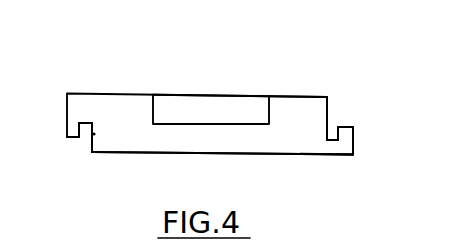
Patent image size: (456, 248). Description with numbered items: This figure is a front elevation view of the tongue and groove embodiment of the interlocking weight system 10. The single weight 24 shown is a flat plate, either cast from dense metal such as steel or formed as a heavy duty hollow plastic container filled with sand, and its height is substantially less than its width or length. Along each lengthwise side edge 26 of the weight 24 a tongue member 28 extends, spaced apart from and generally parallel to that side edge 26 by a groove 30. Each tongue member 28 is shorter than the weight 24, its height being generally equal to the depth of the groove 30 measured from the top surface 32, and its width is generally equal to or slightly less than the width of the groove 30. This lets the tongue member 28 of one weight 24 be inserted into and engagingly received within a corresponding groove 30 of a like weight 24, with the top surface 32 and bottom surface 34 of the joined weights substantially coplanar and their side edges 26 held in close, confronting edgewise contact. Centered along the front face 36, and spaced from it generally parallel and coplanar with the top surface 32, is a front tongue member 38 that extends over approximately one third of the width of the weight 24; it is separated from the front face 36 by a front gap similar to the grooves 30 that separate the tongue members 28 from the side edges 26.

The interlocking weight system 10 is at (271, 72).
The weight 24 is at (323, 170).
The side edge 26 is at (334, 105).
The tongue member 28 is at (353, 134).
The groove 30 is at (336, 129).
The top surface 32 is at (103, 93).
The bottom surface 34 is at (263, 156).
The front face 36 is at (312, 144).
The front tongue member 38 is at (212, 108).